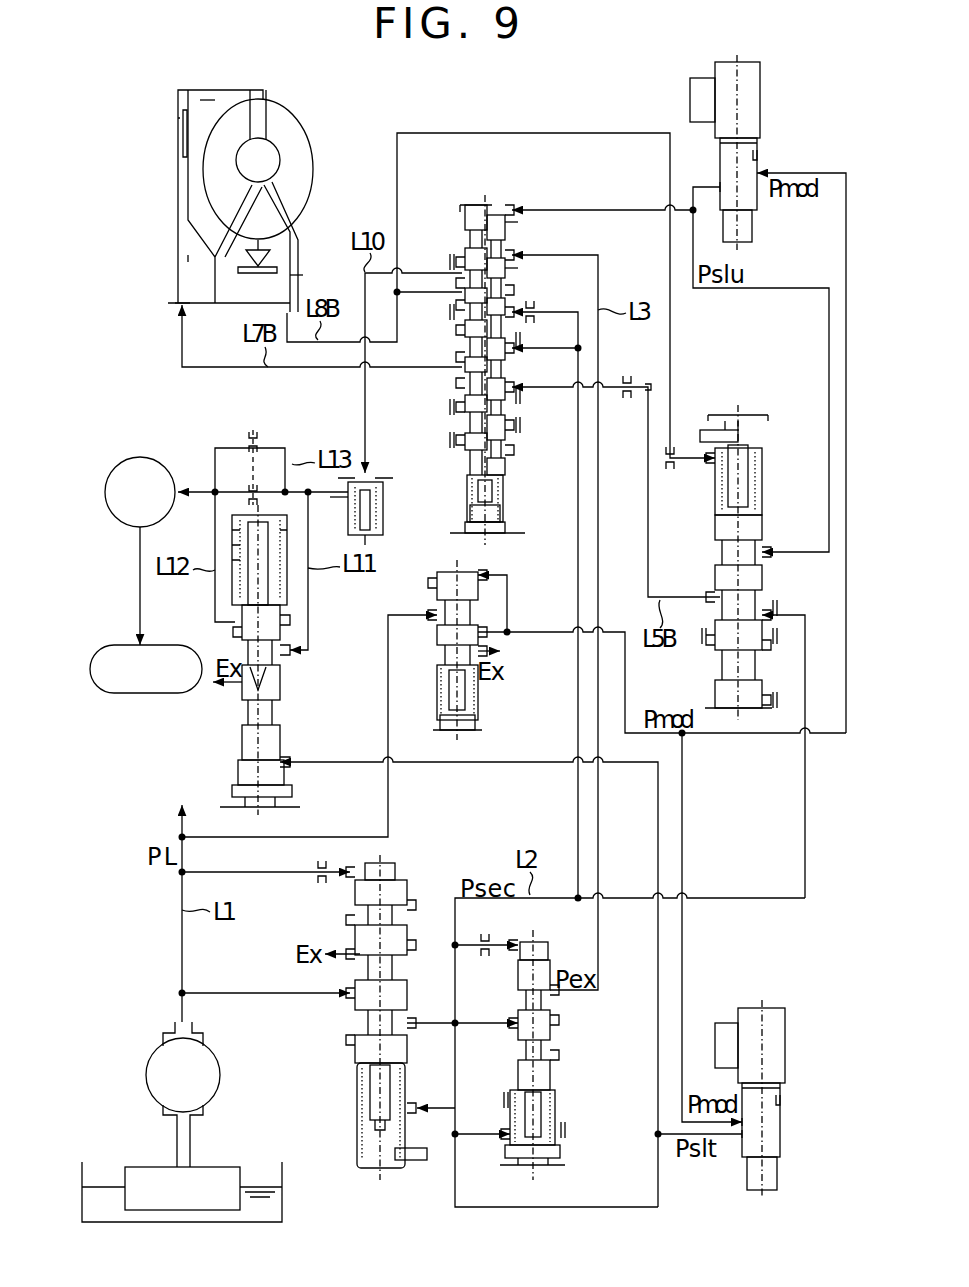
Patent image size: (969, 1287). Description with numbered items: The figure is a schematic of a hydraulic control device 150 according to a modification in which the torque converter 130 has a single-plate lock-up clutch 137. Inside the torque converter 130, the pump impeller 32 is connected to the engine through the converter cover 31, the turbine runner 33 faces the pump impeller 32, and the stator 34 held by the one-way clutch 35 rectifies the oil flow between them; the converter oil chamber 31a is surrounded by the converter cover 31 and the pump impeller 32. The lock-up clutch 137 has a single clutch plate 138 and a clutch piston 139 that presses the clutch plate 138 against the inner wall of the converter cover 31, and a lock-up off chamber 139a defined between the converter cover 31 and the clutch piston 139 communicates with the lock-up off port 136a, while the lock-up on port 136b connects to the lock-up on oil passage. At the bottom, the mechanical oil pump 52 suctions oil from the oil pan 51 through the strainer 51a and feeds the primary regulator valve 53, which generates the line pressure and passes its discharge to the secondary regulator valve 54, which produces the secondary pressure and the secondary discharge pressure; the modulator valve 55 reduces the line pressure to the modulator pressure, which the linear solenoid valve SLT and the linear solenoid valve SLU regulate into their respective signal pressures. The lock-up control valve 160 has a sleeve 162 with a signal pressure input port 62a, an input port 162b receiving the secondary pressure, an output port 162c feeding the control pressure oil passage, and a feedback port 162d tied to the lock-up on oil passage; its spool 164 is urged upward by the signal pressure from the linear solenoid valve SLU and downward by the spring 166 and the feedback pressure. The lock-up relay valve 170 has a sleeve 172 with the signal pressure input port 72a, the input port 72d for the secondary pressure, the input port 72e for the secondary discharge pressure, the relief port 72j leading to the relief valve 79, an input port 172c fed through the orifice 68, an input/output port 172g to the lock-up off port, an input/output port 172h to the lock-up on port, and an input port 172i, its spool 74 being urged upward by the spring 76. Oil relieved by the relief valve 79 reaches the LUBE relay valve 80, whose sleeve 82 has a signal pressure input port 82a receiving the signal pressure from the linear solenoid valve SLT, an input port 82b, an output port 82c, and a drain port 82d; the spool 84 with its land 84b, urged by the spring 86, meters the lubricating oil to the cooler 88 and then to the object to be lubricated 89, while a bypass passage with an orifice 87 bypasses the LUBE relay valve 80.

The torque converter 130 is at (226, 198).
The converter cover 31 is at (259, 92).
The converter oil chamber 31a is at (209, 106).
The pump impeller 32 is at (293, 130).
The turbine runner 33 is at (240, 108).
The stator 34 is at (258, 192).
The one-way clutch 35 is at (275, 262).
The lock-up clutch 137 is at (160, 123).
The clutch plate 138 is at (184, 112).
The clutch piston 139 is at (188, 195).
The lock-up off chamber 139a is at (188, 262).
The lock-up off port 136a is at (178, 312).
The lock-up on port 136b is at (303, 276).
The lock-up relay valve 170 is at (489, 353).
The sleeve 172 is at (512, 222).
The input port 172c is at (514, 412).
The input/output port 172g is at (462, 366).
The input/output port 172h is at (458, 310).
The input port 172i is at (512, 308).
The signal pressure input port 72a is at (512, 210).
The input port 72d is at (514, 352).
The input port 72e is at (514, 260).
The relief port 72j is at (462, 263).
The spool 74 is at (510, 268).
The spring 76 is at (467, 488).
The orifice 68 is at (634, 390).
The hydraulic control device 150 is at (786, 85).
The linear solenoid valve SLU is at (778, 150).
The lock-up control valve 160 is at (744, 544).
The sleeve 162 is at (763, 458).
The input port 162b is at (765, 622).
The output port 162c is at (716, 596).
The feedback port 162d is at (712, 465).
The spool 164 is at (762, 522).
The spring 166 is at (763, 487).
The signal pressure input port 62a is at (765, 548).
The orifice 87 is at (262, 442).
The cooler 88 is at (140, 457).
The object to be lubricated 89 is at (146, 694).
The spring 86 is at (240, 550).
The land 84b is at (272, 605).
The LUBE relay valve 80 is at (272, 660).
The sleeve 82 is at (242, 752).
The signal pressure input port 82a is at (285, 768).
The input port 82b is at (290, 660).
The output port 82c is at (238, 632).
The drain port 82d is at (244, 690).
The spool 84 is at (276, 748).
The relief valve 79 is at (385, 528).
The modulator valve 55 is at (516, 606).
The primary regulator valve 53 is at (407, 893).
The secondary regulator valve 54 is at (572, 1046).
The mechanical oil pump 52 is at (150, 1060).
The oil pan 51 is at (82, 1172).
The strainer 51a is at (135, 1165).
The linear solenoid valve SLT is at (797, 1035).